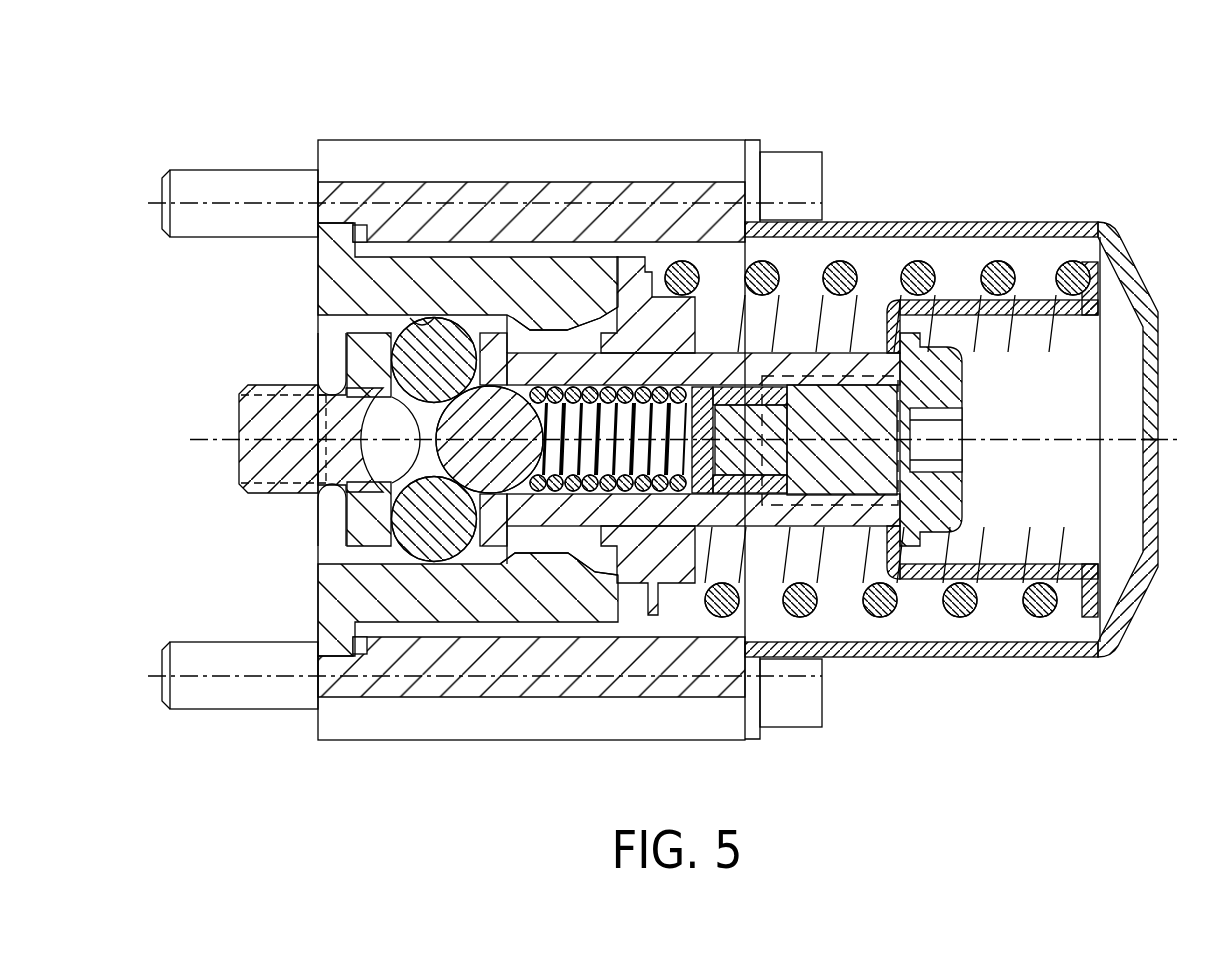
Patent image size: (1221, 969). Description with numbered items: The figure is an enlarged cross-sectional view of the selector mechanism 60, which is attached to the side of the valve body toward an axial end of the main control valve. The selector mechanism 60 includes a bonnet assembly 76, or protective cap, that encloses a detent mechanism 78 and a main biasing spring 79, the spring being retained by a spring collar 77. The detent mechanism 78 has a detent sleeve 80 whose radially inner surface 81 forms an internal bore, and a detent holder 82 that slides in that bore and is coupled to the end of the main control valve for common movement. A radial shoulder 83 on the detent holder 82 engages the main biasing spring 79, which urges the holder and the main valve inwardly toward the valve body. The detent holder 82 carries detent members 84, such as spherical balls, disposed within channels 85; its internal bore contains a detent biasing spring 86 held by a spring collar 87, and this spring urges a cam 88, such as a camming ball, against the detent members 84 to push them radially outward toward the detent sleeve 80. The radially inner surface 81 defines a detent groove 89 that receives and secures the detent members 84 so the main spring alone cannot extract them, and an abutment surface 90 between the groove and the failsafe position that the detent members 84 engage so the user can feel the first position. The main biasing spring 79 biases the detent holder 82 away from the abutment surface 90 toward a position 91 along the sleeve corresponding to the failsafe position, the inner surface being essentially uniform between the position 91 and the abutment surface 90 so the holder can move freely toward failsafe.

The selector mechanism 60 is at (1138, 86).
The bonnet assembly 76 is at (1099, 208).
The spring collar 77 is at (1092, 222).
The detent mechanism 78 is at (668, 605).
The main biasing spring 79 is at (975, 617).
The detent sleeve 80 is at (407, 605).
The radially inner surface 81 is at (503, 552).
The detent holder 82 is at (650, 552).
The radial shoulder 83 is at (662, 277).
The detent members 84 is at (407, 358).
The channels 85 is at (398, 503).
The detent biasing spring 86 is at (685, 415).
The spring collar 87 is at (853, 395).
The cam 88 is at (469, 451).
The detent groove 89 is at (614, 335).
The abutment surface 90 is at (510, 330).
The position 91 is at (418, 318).